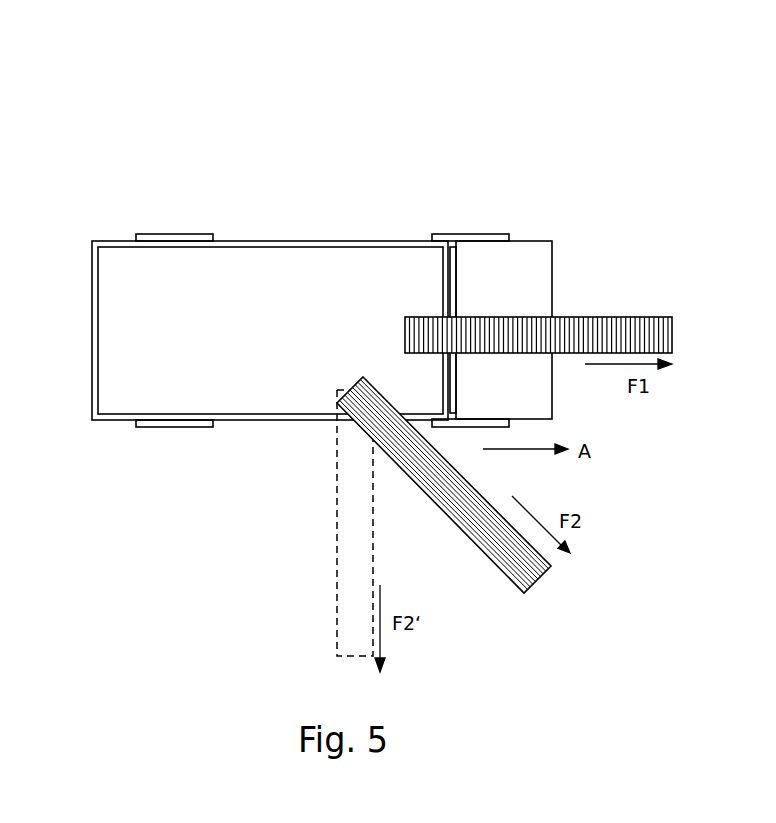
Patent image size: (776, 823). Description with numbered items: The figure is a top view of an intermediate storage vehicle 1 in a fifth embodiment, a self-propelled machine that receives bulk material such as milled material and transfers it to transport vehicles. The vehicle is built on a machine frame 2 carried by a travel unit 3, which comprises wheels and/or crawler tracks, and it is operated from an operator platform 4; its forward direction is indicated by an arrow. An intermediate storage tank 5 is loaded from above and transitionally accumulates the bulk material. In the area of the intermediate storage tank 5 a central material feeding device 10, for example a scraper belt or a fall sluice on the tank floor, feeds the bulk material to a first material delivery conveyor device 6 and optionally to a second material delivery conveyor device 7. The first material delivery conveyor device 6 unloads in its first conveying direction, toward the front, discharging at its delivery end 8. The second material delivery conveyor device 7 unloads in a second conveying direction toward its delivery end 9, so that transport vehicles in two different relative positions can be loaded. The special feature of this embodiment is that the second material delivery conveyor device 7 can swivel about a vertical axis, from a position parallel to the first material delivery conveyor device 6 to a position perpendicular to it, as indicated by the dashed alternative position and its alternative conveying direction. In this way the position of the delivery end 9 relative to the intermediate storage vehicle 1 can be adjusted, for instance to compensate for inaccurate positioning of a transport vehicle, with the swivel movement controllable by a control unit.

The intermediate storage vehicle 1 is at (346, 126).
The machine frame 2 is at (397, 240).
The travel unit 3 is at (177, 236).
The operator platform 4 is at (532, 268).
The intermediate storage tank 5 is at (153, 388).
The first material delivery conveyor device 6 is at (578, 264).
The second material delivery conveyor device 7 is at (444, 544).
The delivery end of the first material delivery conveyor device 8 is at (666, 323).
The delivery end of the second material delivery conveyor device 9 is at (520, 585).
The central material feeding device 10 is at (290, 245).